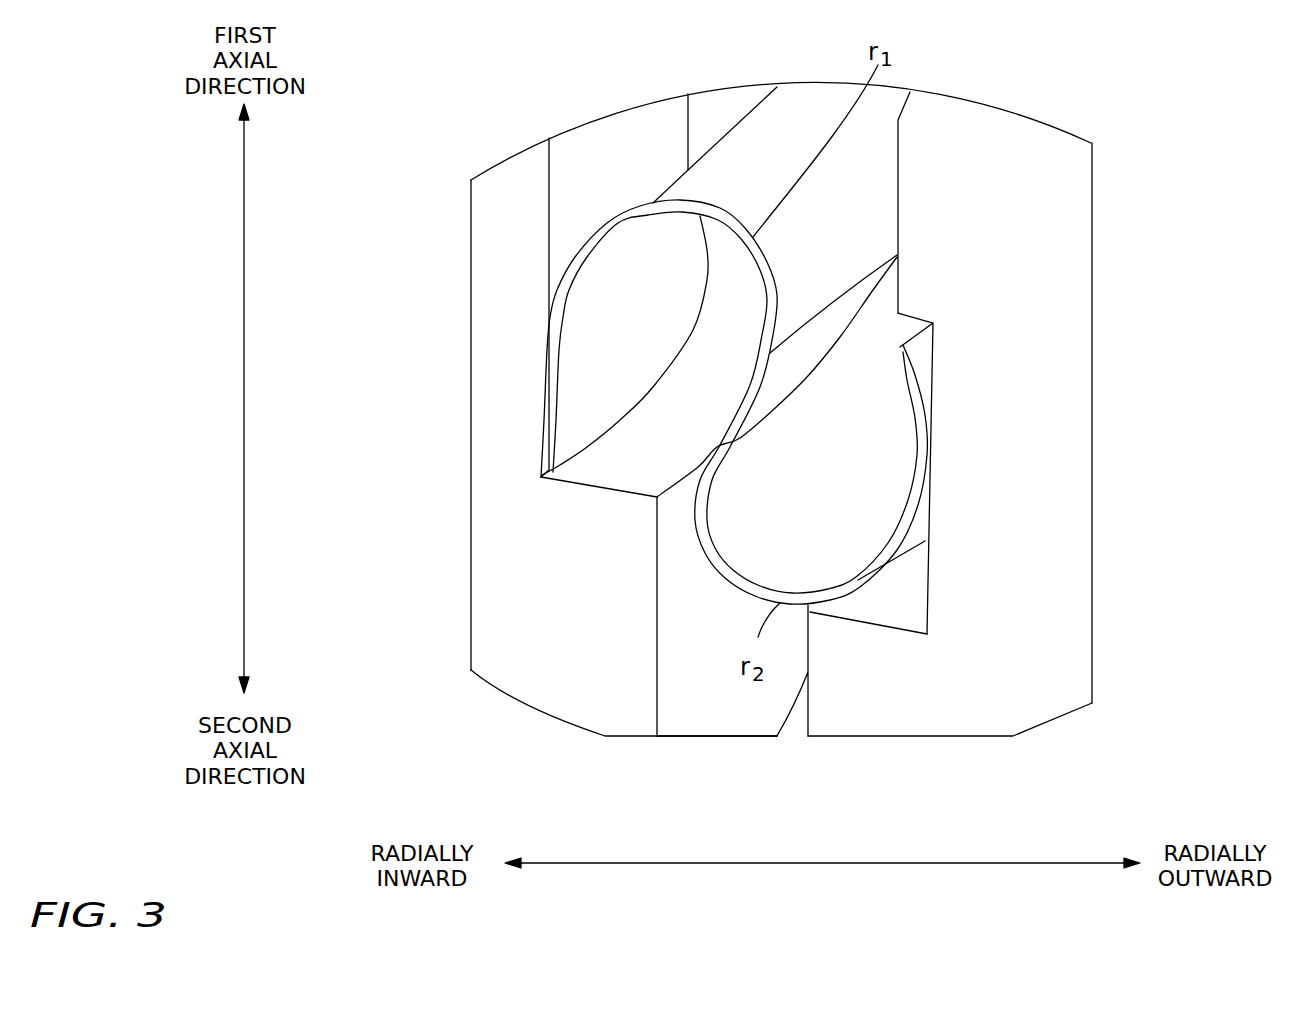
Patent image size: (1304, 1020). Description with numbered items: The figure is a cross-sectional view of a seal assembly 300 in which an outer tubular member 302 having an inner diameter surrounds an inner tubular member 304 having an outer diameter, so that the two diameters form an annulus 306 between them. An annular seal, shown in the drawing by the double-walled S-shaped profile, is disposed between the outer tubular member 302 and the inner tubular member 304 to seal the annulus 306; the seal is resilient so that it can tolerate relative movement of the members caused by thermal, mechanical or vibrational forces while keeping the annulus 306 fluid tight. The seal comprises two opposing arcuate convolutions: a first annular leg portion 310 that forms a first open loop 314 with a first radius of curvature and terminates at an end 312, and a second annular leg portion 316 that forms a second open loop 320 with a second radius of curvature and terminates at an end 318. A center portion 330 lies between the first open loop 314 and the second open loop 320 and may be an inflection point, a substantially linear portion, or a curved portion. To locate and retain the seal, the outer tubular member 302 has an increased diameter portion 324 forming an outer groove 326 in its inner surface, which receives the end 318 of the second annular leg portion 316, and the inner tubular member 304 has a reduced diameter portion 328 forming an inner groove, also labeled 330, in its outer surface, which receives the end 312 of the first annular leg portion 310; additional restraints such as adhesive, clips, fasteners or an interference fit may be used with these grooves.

The seal assembly 300 is at (1180, 97).
The outer tubular member 302 is at (1086, 372).
The inner tubular member 304 is at (470, 385).
The annulus 306 is at (676, 670).
The first annular leg portion 310 is at (694, 190).
The end 312 is at (553, 462).
The first open loop 314 is at (723, 210).
The second annular leg portion 316 is at (734, 590).
The end 318 is at (905, 335).
The second open loop 320 is at (792, 605).
The increased diameter portion 324 is at (927, 577).
The outer groove 326 is at (920, 612).
The reduced diameter portion 328 is at (551, 163).
The center portion 330 is at (618, 127).